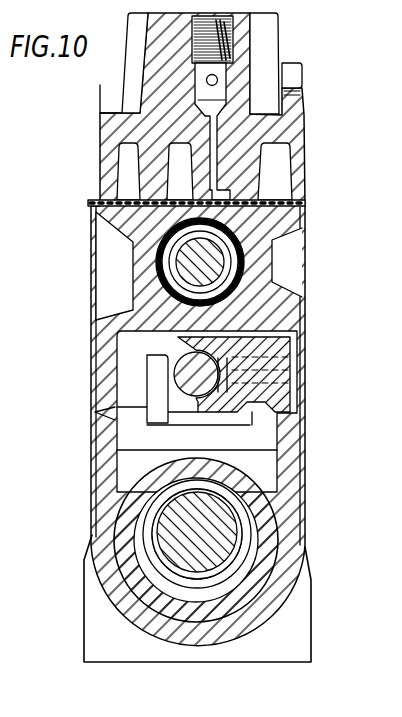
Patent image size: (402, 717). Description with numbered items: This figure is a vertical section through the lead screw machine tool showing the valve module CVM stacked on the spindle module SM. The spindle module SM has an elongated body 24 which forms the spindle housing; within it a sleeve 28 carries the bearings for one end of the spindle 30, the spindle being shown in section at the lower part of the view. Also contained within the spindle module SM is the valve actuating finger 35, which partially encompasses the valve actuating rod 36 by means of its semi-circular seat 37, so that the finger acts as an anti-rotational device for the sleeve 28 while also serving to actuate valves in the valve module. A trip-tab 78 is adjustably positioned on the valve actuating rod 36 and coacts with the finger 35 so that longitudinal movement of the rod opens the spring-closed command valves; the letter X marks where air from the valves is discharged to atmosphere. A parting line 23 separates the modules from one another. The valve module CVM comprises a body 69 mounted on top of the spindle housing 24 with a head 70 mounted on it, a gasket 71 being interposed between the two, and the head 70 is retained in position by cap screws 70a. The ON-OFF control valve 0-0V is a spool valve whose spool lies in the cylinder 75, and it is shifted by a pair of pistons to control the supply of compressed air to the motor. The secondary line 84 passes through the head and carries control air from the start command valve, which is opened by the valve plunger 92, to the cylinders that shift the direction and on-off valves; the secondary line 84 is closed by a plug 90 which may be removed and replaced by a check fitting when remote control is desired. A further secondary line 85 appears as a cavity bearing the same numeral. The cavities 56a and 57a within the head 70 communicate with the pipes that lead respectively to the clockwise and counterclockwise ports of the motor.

The cap screws 70a is at (106, 97).
The secondary line 85 is at (192, 153).
The cavity 57a is at (122, 172).
The plug 90 is at (284, 30).
The valve plunger 92 is at (304, 64).
The secondary line 84 is at (223, 101).
The head 70 is at (298, 135).
The cavity 56a is at (290, 167).
The gasket 71 is at (281, 198).
The valve module CVM is at (292, 220).
The ON-OFF control valve 0-0V is at (227, 277).
The cylinder 75 is at (262, 299).
The body 69 is at (168, 322).
The valve actuating rod 36 is at (183, 354).
The air out to atmosphere X is at (255, 342).
The valve actuating finger 35 is at (147, 393).
The semi-circular seat 37 is at (165, 408).
The trip-tab 78 is at (282, 400).
The parting line 23 is at (288, 433).
The spindle 30 is at (243, 530).
The sleeve 28 is at (253, 567).
The elongated body 24 is at (310, 578).
The spindle module SM is at (88, 565).